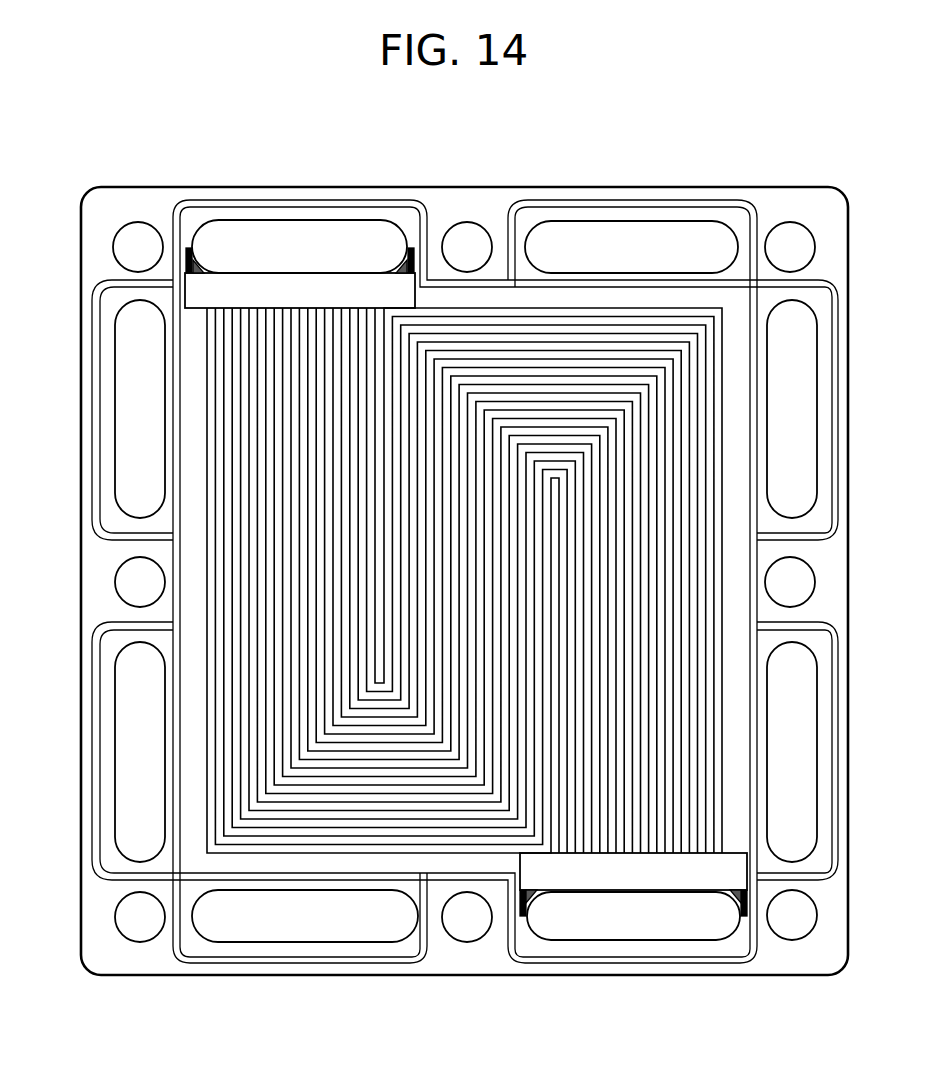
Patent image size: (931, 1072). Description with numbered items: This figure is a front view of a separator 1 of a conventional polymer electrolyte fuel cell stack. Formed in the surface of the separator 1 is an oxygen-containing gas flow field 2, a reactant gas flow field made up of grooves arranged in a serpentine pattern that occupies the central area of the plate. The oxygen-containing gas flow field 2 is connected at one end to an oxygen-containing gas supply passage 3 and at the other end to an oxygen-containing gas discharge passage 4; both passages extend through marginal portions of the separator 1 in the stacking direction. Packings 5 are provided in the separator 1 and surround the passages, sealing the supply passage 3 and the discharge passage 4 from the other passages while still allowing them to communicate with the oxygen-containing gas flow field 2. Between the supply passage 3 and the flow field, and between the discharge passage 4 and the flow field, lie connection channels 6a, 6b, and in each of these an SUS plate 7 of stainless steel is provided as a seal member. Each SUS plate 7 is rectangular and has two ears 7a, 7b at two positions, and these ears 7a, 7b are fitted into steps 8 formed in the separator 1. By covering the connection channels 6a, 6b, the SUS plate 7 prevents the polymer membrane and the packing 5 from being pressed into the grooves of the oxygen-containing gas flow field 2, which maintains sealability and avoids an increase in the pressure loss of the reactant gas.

The separator 1 is at (632, 184).
The oxygen-containing gas flow field 2 is at (295, 496).
The oxygen-containing gas supply passage 3 is at (292, 243).
The oxygen-containing gas discharge passage 4 is at (642, 918).
The packing 5 is at (97, 378).
The connection channel 6a is at (317, 293).
The connection channel 6b is at (677, 867).
The SUS plate 7 is at (255, 293).
The ear 7a is at (186, 258).
The ear 7b is at (523, 898).
The step 8 is at (196, 262).